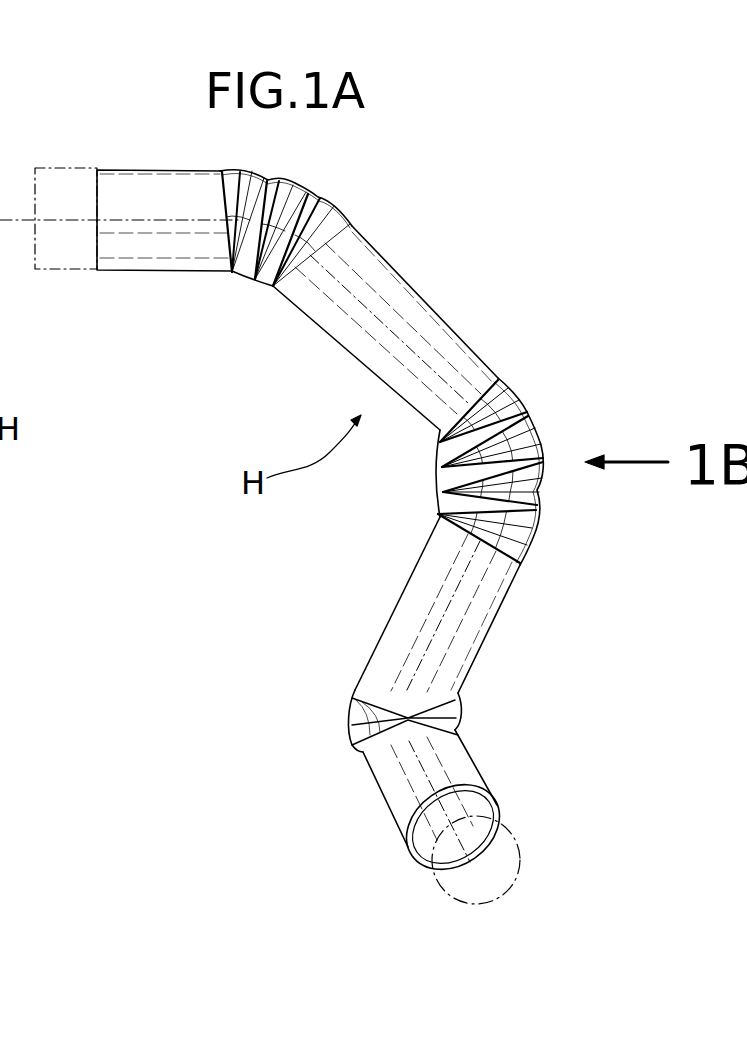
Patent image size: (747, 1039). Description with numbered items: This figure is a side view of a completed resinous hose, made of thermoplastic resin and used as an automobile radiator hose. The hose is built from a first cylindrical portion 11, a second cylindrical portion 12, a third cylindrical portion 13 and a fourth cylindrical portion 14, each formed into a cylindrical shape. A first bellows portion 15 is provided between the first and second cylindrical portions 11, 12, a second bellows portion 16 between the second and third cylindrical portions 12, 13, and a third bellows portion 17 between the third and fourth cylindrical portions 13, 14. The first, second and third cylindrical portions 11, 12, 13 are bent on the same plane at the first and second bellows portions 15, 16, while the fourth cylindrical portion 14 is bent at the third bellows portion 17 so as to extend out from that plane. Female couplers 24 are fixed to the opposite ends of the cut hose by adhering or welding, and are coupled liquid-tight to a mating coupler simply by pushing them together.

The first cylindrical portion 11 is at (165, 255).
The second cylindrical portion 12 is at (420, 318).
The third cylindrical portion 13 is at (410, 617).
The fourth cylindrical portion 14 is at (392, 778).
The first bellows portion 15 is at (350, 192).
The second bellows portion 16 is at (549, 436).
The third bellows portion 17 is at (337, 738).
The female coupler 24 is at (60, 272).